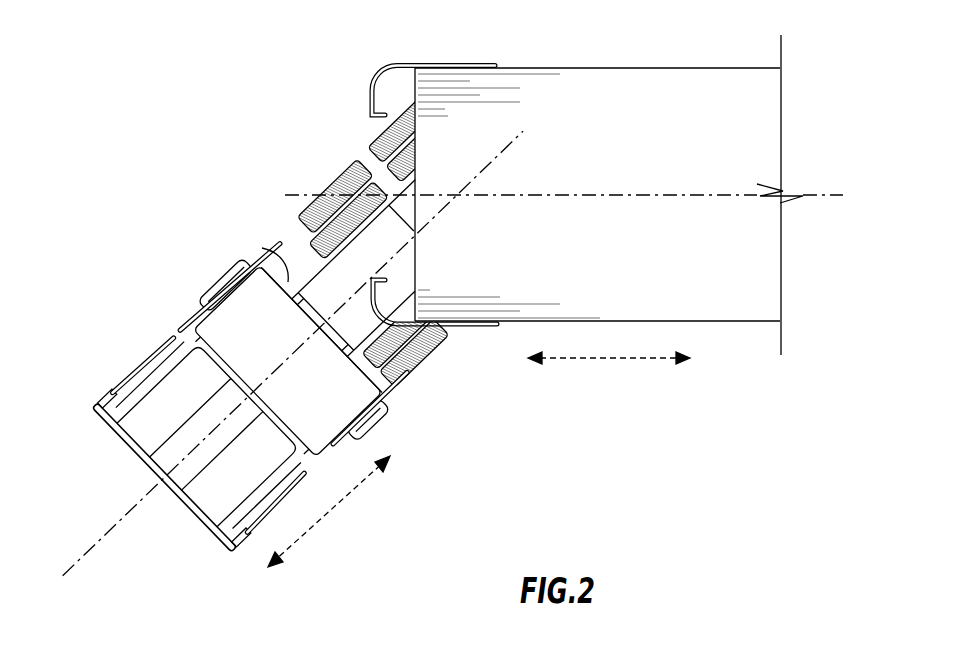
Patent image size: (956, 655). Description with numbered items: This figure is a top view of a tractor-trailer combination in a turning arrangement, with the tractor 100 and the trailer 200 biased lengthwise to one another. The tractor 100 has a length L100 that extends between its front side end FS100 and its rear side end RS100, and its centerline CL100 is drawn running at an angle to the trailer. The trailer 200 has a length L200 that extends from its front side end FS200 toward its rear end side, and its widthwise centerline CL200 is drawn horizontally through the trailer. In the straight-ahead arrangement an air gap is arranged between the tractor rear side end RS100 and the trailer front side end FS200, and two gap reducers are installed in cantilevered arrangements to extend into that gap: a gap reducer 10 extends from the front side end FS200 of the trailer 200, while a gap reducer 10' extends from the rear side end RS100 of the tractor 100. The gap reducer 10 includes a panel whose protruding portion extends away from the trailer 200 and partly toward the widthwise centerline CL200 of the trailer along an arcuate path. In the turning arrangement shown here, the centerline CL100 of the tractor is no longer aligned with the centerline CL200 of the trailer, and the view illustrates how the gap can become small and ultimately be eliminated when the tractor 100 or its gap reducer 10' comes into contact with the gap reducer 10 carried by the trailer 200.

The tractor 100 is at (150, 370).
The trailer 200 is at (663, 68).
The gap reducer 10 is at (415, 182).
The gap reducer 10' is at (293, 375).
The front side end of tractor FS100 is at (130, 452).
The rear side end of tractor RS100 is at (354, 270).
The centerline of tractor CL100 is at (88, 546).
The tractor length L100 is at (330, 510).
The front side end of trailer FS200 is at (413, 167).
The widthwise centerline of trailer CL200 is at (848, 196).
The trailer length L200 is at (607, 360).